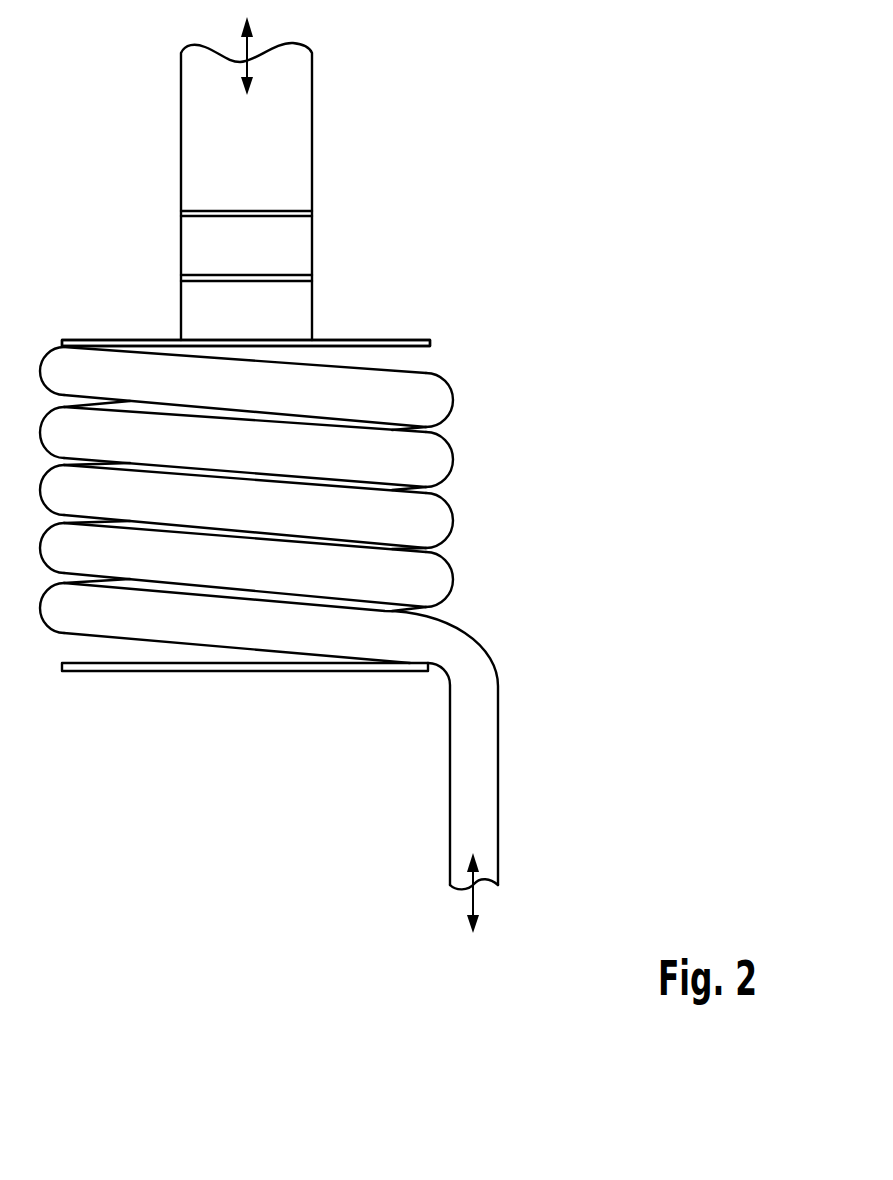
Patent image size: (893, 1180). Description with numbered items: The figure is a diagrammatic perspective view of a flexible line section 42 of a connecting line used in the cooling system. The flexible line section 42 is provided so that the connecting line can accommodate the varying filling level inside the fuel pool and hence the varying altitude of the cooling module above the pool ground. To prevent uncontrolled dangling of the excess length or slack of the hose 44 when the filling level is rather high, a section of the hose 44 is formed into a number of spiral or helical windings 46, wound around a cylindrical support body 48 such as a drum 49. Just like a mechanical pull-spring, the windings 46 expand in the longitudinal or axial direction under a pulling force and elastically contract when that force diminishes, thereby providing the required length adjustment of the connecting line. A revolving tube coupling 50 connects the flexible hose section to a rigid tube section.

The flexible line section 42 is at (402, 475).
The hose 44 is at (498, 789).
The spiral or helical windings 46 is at (476, 457).
The cylindrical support body 48 is at (430, 344).
The drum 49 is at (430, 344).
The revolving tube coupling 50 is at (312, 246).